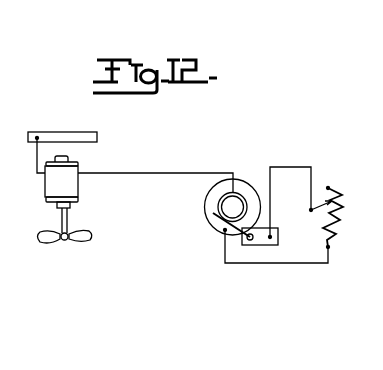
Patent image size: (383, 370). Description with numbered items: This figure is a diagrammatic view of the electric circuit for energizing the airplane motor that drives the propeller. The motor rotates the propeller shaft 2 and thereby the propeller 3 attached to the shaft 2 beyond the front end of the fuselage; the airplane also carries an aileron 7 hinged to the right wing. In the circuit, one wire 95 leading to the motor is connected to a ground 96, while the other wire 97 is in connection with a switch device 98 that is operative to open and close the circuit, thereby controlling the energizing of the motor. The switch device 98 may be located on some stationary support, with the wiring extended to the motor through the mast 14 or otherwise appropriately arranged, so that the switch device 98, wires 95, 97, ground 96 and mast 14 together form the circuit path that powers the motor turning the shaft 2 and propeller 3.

The ground 96 is at (58, 137).
The wire 95 is at (33, 167).
The aileron 7 is at (73, 188).
The propeller shaft 2 is at (67, 225).
The propeller 3 is at (51, 242).
The wire 97 is at (193, 173).
The mast 14 is at (236, 205).
The switch device 98 is at (338, 230).